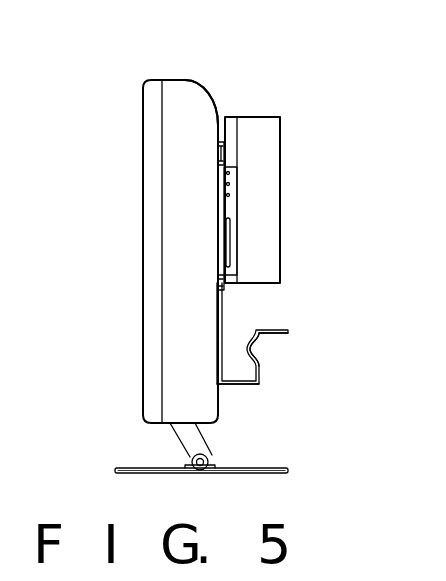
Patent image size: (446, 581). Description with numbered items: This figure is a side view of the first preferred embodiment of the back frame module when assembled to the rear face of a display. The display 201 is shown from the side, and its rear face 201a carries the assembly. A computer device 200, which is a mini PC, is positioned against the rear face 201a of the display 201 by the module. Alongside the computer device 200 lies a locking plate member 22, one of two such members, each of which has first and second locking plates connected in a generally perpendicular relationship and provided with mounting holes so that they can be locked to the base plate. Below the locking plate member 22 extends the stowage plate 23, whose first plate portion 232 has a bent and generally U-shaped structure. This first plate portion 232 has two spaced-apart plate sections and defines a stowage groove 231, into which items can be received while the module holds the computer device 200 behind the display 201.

The computer device 200 is at (257, 180).
The display 201 is at (184, 80).
The rear face of the display 201a is at (218, 125).
The locking plate member 22 is at (228, 208).
The stowage plate 23 is at (277, 374).
The stowage groove 231 is at (246, 343).
The first plate portion 232 is at (236, 385).